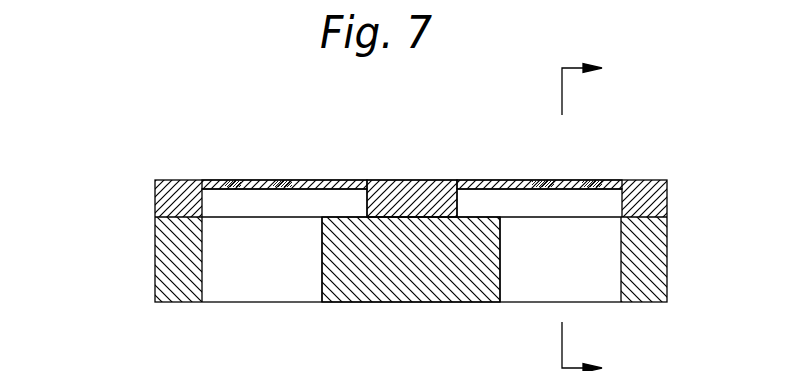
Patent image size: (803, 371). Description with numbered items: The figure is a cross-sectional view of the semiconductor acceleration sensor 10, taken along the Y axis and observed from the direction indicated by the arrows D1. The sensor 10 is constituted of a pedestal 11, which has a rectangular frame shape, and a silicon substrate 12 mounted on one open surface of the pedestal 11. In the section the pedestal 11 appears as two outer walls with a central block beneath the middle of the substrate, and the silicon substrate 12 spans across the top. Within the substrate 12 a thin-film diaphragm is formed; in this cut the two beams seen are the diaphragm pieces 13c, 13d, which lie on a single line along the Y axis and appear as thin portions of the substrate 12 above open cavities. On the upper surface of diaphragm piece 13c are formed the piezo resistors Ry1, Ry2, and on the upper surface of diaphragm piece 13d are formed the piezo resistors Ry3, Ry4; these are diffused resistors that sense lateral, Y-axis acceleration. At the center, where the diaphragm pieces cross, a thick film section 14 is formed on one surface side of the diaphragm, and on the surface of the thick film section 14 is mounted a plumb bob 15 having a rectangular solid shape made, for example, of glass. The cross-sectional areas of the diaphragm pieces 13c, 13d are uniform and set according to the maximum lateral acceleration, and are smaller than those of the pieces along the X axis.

The semiconductor acceleration sensor 10 is at (118, 149).
The pedestal 11 is at (158, 259).
The silicon substrate 12 is at (187, 180).
The diaphragm piece 13c is at (493, 180).
The diaphragm piece 13d is at (311, 180).
The thick film section 14 is at (398, 204).
The plumb bob 15 is at (380, 283).
The piezo resistor Ry1 is at (590, 180).
The piezo resistor Ry2 is at (540, 180).
The piezo resistor Ry3 is at (281, 180).
The piezo resistor Ry4 is at (231, 180).
The direction D1 is at (595, 213).